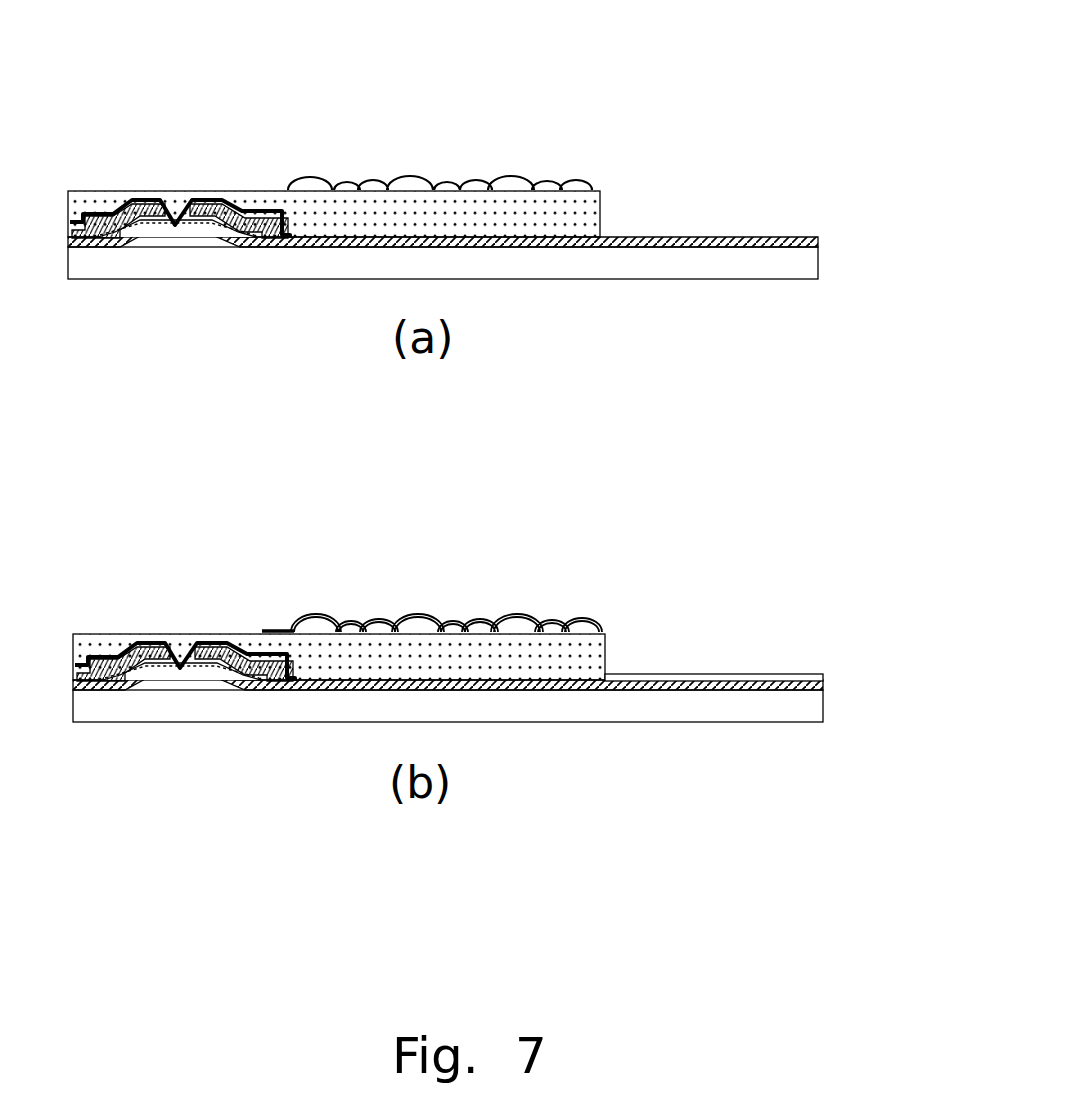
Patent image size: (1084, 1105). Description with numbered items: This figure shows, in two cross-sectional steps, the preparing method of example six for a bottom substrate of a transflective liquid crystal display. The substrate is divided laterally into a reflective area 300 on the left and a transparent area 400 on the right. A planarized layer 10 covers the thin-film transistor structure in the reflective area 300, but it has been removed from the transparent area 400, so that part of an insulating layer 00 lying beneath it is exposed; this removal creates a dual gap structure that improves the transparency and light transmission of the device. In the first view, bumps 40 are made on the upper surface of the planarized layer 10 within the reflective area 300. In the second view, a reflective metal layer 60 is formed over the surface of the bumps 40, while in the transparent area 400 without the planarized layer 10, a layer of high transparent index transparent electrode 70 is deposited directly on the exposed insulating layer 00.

The insulating layer 00 is at (820, 242).
The planarized layer 10 is at (600, 207).
The bumps 40 is at (510, 182).
The reflective metal layer 60 is at (520, 615).
The transparent electrode 70 is at (772, 678).
The reflective area 300 is at (402, 85).
The transparent area 400 is at (700, 93).